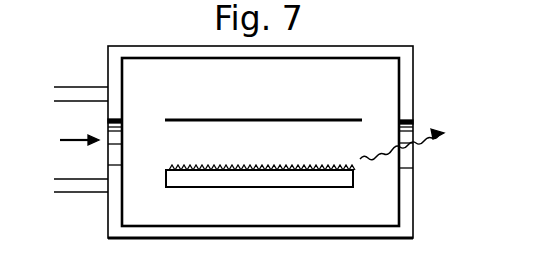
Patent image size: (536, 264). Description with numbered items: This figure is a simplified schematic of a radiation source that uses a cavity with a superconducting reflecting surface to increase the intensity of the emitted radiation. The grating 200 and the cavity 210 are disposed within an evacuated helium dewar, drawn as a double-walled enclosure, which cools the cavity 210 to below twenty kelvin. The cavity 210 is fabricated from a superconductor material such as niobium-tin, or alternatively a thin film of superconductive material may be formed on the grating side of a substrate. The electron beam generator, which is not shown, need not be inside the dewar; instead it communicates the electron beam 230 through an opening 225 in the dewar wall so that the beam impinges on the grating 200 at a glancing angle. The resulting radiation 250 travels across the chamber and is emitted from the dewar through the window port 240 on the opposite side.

The grating 200 is at (343, 187).
The cavity 210 is at (176, 118).
The opening 225 is at (109, 122).
The electron beam 230 is at (68, 134).
The window port 240 is at (413, 151).
The radiation 250 is at (430, 133).